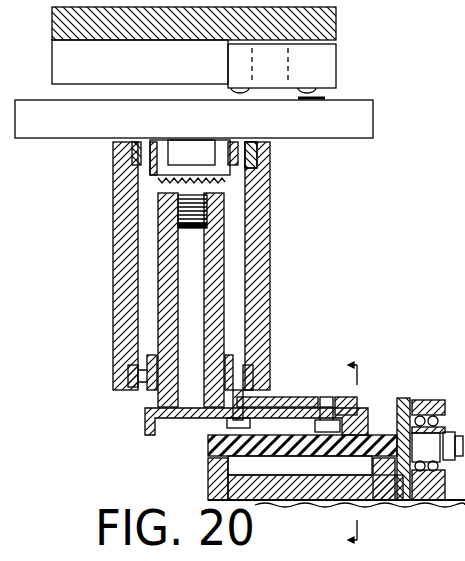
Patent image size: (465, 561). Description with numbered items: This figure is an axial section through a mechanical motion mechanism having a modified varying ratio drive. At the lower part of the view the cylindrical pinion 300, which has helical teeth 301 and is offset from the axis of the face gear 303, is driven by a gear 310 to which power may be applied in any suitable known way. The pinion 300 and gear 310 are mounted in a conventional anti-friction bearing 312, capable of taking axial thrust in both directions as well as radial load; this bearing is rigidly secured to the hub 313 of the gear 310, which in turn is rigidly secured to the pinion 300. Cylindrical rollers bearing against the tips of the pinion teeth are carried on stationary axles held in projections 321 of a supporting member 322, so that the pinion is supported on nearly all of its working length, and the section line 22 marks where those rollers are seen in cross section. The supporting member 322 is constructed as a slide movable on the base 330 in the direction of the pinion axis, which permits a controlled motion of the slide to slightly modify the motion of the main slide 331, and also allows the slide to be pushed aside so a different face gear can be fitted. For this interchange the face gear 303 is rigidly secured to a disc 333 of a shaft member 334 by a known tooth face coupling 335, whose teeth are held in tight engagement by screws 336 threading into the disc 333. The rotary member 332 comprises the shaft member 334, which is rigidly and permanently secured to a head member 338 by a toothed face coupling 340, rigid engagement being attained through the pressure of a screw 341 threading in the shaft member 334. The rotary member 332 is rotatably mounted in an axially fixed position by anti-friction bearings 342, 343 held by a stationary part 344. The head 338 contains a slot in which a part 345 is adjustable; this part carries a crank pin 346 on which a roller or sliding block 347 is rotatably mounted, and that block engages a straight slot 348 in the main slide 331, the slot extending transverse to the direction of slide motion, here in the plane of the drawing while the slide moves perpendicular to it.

The cylindrical pinion 300 is at (210, 447).
The helical teeth 301 is at (300, 465).
The face gear 303 is at (146, 430).
The gear 310 is at (401, 400).
The anti-friction bearing 312 is at (462, 378).
The hub 313 is at (420, 478).
The projections 321 is at (210, 470).
The supporting member 322 is at (208, 492).
The base 330 is at (345, 508).
The main slide 331 is at (60, 33).
The rotary member 332 is at (196, 172).
The disc 333 is at (270, 393).
The shaft member 334 is at (213, 316).
The tooth face coupling 335 is at (343, 402).
The screws 336 is at (228, 424).
The head member 338 is at (315, 130).
The toothed face coupling 340 is at (210, 180).
The screw 341 is at (207, 208).
The anti-friction bearing 342 is at (134, 160).
The anti-friction bearing 343 is at (128, 378).
The stationary part 344 is at (116, 275).
The adjustable part 345 is at (303, 97).
The crank pin 346 is at (290, 70).
The roller or sliding block 347 is at (310, 57).
The straight slot 348 is at (143, 60).
The section line 22 is at (370, 455).